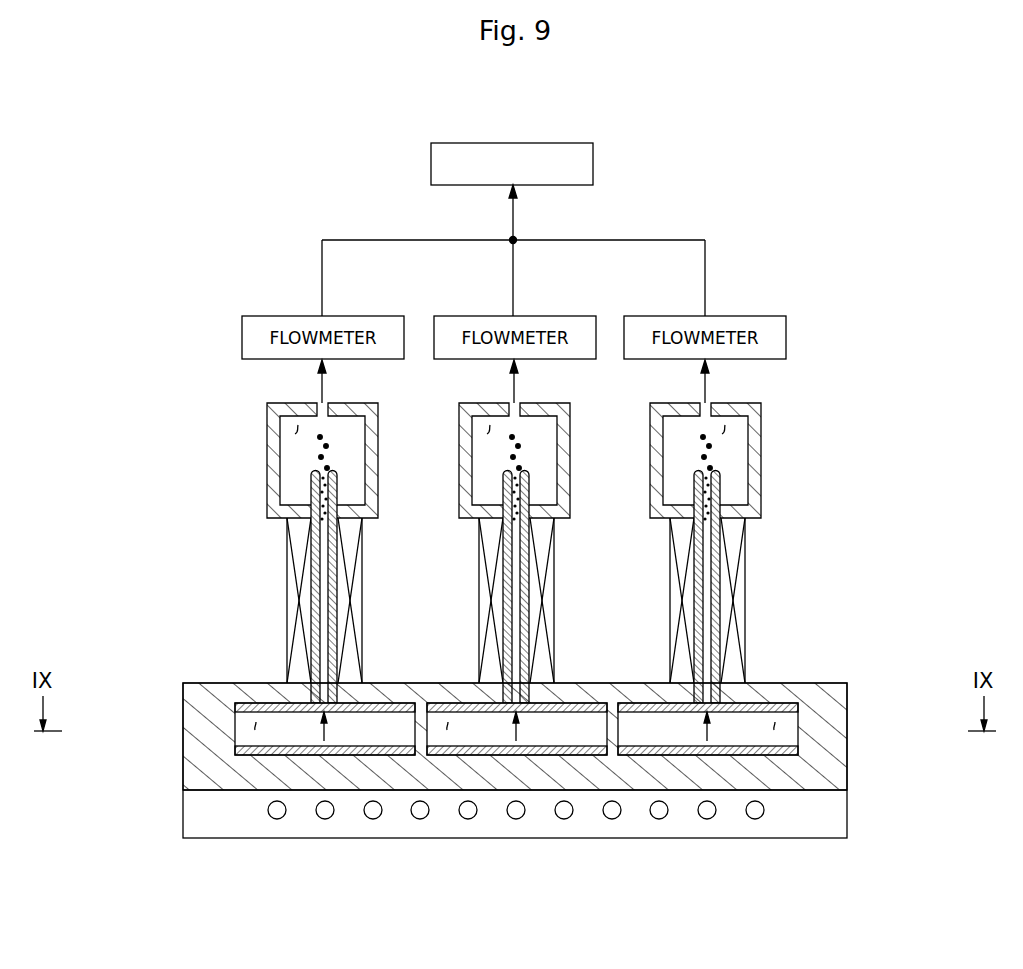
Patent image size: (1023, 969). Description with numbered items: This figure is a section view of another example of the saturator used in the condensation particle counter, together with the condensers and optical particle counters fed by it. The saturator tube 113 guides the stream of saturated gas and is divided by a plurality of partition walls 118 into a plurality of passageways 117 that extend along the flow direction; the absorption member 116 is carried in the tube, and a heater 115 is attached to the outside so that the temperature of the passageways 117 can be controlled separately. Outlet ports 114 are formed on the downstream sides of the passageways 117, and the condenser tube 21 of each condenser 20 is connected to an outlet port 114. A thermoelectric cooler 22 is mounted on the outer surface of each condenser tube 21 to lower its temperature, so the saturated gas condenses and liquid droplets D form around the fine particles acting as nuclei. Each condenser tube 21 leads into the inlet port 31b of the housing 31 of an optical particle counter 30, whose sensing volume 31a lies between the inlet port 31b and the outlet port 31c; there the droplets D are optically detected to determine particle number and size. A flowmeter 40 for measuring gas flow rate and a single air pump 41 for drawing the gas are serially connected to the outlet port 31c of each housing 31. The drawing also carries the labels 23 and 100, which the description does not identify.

The air pump 41 is at (431, 163).
The flowmeter 40 is at (355, 316).
The optical particle counter 30 is at (258, 468).
The housing 31 is at (270, 490).
The sensing volume 31a is at (296, 433).
The inlet port 31b is at (311, 522).
The outlet port 31c is at (318, 403).
The condenser 20 is at (279, 583).
The condenser tube 21 is at (338, 563).
The thermoelectric cooler 22 is at (358, 650).
The nozzle channel 23 is at (322, 612).
The liquid droplets D is at (512, 452).
The base plate 100 is at (173, 803).
The saturator tube 113 is at (812, 790).
The outlet ports 114 is at (322, 745).
The heater 115 is at (611, 819).
The absorption member 116 is at (256, 703).
The passageways 117 is at (395, 755).
The partition walls 118 is at (256, 726).